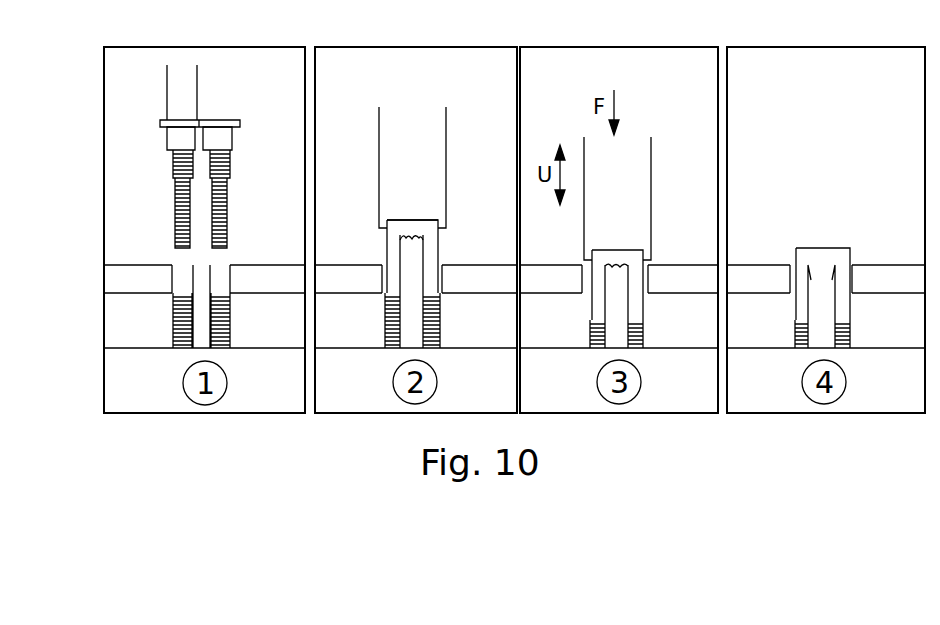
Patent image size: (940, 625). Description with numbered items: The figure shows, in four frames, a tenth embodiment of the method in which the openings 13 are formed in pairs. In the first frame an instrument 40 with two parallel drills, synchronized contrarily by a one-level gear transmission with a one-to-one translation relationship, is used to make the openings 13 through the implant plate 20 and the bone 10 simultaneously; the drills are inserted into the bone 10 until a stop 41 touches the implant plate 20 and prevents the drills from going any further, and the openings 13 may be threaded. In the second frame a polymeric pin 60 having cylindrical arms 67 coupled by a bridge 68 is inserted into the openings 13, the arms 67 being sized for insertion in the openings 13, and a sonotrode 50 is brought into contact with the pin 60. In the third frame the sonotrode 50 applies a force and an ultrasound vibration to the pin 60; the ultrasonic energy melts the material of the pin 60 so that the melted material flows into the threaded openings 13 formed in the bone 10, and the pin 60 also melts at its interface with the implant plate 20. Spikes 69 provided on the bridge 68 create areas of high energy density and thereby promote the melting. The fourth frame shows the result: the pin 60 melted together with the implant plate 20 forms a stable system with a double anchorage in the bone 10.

The bone 10 is at (115, 318).
The openings 13 is at (178, 330).
The implant plate 20 is at (115, 272).
The instrument 40 is at (176, 140).
The stop 41 is at (236, 138).
The sonotrode 50 is at (380, 125).
The pin 60 is at (637, 258).
The cylindrical arms 67 is at (393, 253).
The bridge 68 is at (420, 226).
The spikes 69 is at (420, 238).